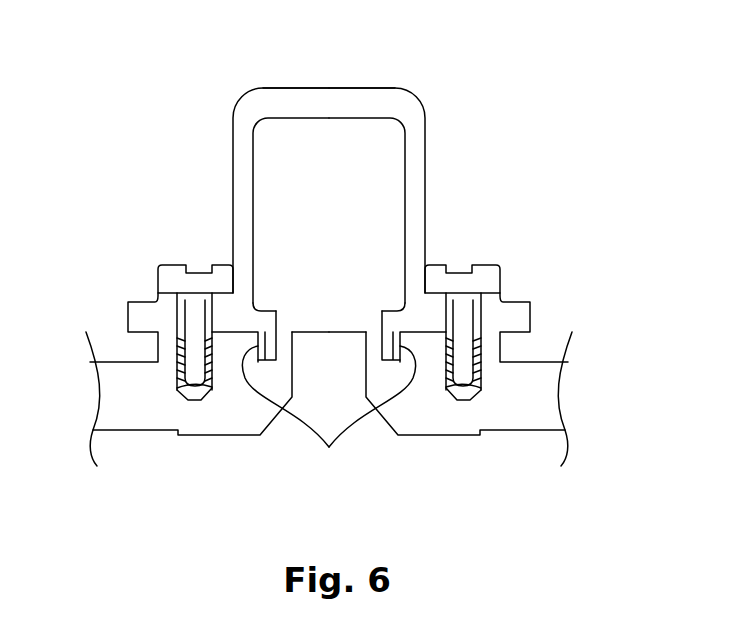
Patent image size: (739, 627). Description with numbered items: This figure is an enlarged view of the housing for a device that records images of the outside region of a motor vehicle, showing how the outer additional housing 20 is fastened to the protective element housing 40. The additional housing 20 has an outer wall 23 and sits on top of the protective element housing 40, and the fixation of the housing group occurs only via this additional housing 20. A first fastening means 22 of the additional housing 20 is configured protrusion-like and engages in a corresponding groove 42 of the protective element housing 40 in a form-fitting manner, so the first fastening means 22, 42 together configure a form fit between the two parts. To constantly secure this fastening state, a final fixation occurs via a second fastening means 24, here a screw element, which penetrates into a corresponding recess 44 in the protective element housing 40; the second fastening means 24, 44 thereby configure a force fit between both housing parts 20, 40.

The additional housing 20 is at (411, 146).
The first fastening means 22 is at (269, 338).
The outer wall 23 is at (368, 88).
The second fastening means 24 is at (170, 265).
The protective element housing 40 is at (426, 412).
The groove 42 is at (330, 447).
The recess 44 is at (197, 402).